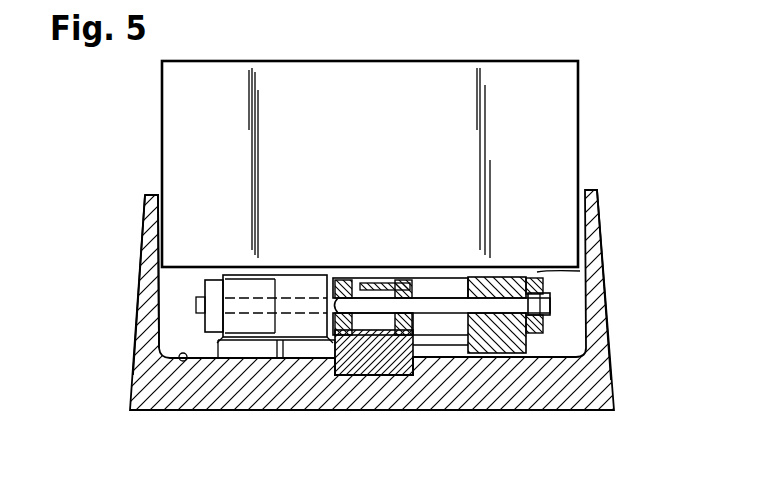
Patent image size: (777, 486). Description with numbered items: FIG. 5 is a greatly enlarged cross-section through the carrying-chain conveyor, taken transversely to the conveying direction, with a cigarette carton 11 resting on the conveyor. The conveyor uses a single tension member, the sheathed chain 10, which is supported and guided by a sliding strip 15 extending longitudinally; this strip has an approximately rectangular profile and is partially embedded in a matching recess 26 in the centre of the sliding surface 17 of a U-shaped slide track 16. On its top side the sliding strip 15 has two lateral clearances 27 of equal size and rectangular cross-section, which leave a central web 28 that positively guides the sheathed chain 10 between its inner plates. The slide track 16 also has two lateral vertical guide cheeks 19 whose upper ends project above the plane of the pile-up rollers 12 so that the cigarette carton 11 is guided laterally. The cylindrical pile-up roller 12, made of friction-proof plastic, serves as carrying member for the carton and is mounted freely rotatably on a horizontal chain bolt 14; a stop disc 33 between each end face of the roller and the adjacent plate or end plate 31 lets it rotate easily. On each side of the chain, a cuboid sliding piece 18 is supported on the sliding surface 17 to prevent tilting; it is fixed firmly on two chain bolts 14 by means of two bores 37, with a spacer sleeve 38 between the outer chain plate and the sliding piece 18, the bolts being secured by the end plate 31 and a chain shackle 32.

The sheathed chain 10 is at (369, 262).
The cigarette carton 11 is at (438, 80).
The pile-up roller 12 is at (288, 337).
The chain bolt 14 is at (458, 315).
The sliding strip 15 is at (418, 350).
The slide track 16 is at (588, 385).
The sliding surface 17 is at (184, 362).
The sliding piece 18 is at (235, 357).
The guide cheek 19 is at (152, 233).
The recess 26 is at (340, 385).
The clearance 27 is at (350, 380).
The web 28 is at (380, 362).
The end plate 31 is at (537, 272).
The chain shackle 32 is at (545, 291).
The stop disc 33 is at (534, 340).
The bore 37 is at (517, 278).
The spacer sleeve 38 is at (430, 285).